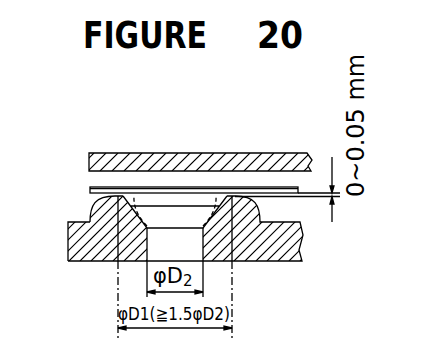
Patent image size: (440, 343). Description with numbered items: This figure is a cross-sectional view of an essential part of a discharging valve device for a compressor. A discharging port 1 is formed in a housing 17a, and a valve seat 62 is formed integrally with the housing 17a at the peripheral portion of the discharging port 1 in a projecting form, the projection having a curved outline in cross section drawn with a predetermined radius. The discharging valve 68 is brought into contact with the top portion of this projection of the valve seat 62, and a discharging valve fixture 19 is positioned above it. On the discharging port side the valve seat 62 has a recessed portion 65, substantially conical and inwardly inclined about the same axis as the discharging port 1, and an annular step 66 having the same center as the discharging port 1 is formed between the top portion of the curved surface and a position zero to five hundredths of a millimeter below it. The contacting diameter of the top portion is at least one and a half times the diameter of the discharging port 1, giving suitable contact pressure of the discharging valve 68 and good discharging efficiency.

The discharging port 1 is at (183, 243).
The housing 17a is at (79, 242).
The discharging valve fixture 19 is at (103, 153).
The valve seat 62 is at (100, 202).
The recessed portion 65 is at (180, 208).
The annular step 66 is at (122, 196).
The discharging valve 68 is at (90, 189).